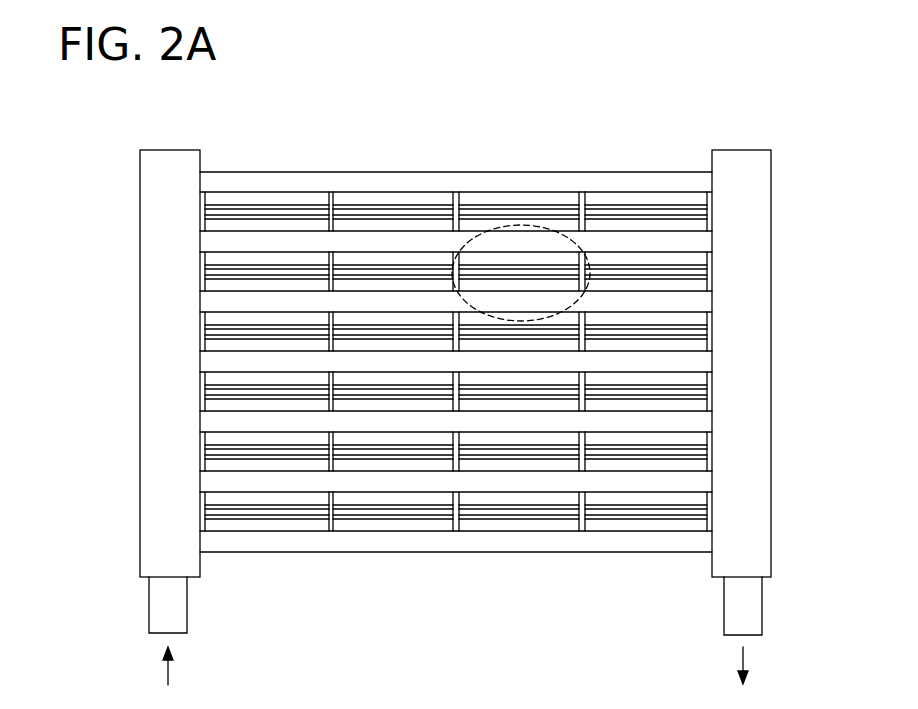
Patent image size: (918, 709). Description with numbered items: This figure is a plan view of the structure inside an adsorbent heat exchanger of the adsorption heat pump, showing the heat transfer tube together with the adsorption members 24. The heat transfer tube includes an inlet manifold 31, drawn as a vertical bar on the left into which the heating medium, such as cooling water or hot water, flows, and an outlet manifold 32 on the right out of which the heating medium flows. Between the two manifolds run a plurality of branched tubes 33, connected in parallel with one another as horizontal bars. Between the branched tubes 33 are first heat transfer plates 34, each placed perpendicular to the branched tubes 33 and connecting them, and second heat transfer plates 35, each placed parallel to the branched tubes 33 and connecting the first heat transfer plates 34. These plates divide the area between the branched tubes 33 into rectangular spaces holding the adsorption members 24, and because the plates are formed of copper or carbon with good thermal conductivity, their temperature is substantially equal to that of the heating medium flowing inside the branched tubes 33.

The adsorption member 24 is at (402, 224).
The inlet manifold 31 is at (168, 152).
The outlet manifold 32 is at (740, 153).
The branched tube 33 is at (277, 242).
The first heat transfer plate 34 is at (331, 192).
The second heat transfer plate 35 is at (518, 210).